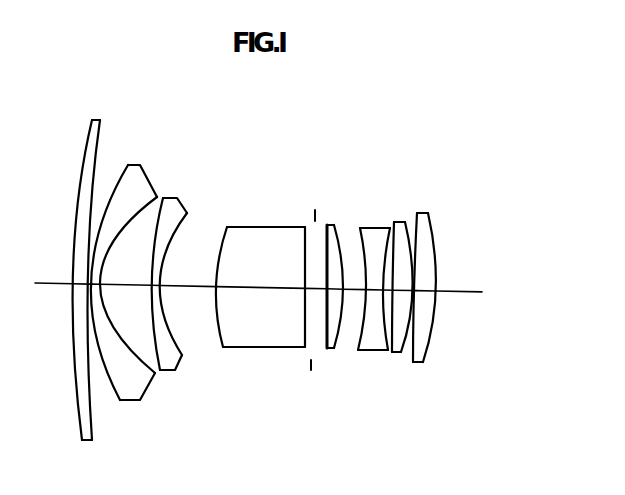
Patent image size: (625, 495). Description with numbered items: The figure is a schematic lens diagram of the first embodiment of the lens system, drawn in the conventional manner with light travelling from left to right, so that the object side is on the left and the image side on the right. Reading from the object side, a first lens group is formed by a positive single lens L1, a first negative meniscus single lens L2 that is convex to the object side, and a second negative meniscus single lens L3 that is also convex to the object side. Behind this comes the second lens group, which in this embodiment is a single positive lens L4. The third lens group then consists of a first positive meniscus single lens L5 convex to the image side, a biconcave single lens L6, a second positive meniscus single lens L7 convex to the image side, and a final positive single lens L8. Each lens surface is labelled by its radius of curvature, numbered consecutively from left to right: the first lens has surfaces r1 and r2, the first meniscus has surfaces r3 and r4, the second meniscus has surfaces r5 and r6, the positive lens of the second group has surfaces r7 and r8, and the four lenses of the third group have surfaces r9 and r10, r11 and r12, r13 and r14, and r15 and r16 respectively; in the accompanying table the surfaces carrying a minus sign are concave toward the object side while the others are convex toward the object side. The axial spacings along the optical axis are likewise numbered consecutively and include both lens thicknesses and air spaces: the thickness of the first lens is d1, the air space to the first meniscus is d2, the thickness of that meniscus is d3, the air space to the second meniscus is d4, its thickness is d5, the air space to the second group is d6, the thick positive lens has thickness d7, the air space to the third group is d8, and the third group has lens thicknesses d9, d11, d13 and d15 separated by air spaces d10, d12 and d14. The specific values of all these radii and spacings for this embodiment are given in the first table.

The positive single lens L1 is at (95, 121).
The first negative meniscus single lens L2 is at (140, 166).
The second negative meniscus single lens L3 is at (178, 198).
The positive lens L4 is at (267, 227).
The first positive meniscus single lens L5 is at (334, 224).
The biconcave single lens L6 is at (382, 227).
The second positive meniscus single lens L7 is at (399, 220).
The positive single lens L8 is at (425, 212).
The radius of curvature of first surface r1 is at (76, 395).
The radius of curvature of second surface r2 is at (92, 436).
The radius of curvature of third surface r3 is at (112, 385).
The radius of curvature of fourth surface r4 is at (145, 372).
The radius of curvature of fifth surface r5 is at (172, 360).
The radius of curvature of sixth surface r6 is at (173, 313).
The radius of curvature of seventh surface r7 is at (221, 337).
The radius of curvature of eighth surface r8 is at (304, 343).
The radius of curvature of ninth surface r9 is at (327, 348).
The radius of curvature of tenth surface r10 is at (336, 350).
The radius of curvature of eleventh surface r11 is at (358, 351).
The radius of curvature of twelfth surface r12 is at (387, 353).
The radius of curvature of thirteenth surface r13 is at (394, 353).
The radius of curvature of fourteenth surface r14 is at (402, 353).
The radius of curvature of fifteenth surface r15 is at (414, 363).
The radius of curvature of sixteenth surface r16 is at (424, 362).
The axial thickness of first lens d1 is at (76, 280).
The axial air space between first and second lenses d2 is at (89, 285).
The axial thickness of second lens d3 is at (101, 275).
The axial air space between second and third lenses d4 is at (126, 276).
The axial thickness of third lens d5 is at (160, 265).
The axial air space between third and fourth lenses d6 is at (188, 277).
The axial thickness of fourth lens d7 is at (260, 281).
The axial air space between fourth and fifth lenses d8 is at (337, 286).
The axial thickness of fifth lens d9 is at (324, 267).
The axial air space between fifth and sixth lenses d10 is at (354, 288).
The axial thickness of sixth lens d11 is at (364, 290).
The axial air space between sixth and seventh lenses d12 is at (390, 290).
The axial thickness of seventh lens d13 is at (416, 284).
The axial air space between seventh and eighth lenses d14 is at (431, 305).
The axial thickness of eighth lens d15 is at (424, 297).